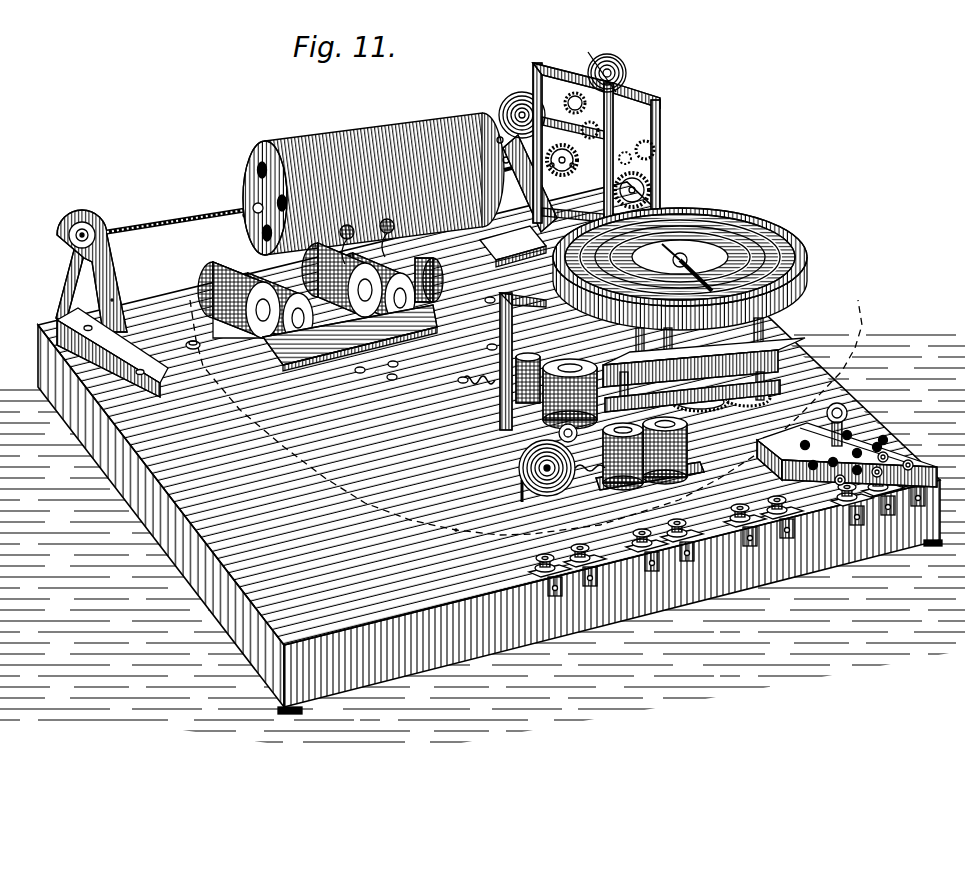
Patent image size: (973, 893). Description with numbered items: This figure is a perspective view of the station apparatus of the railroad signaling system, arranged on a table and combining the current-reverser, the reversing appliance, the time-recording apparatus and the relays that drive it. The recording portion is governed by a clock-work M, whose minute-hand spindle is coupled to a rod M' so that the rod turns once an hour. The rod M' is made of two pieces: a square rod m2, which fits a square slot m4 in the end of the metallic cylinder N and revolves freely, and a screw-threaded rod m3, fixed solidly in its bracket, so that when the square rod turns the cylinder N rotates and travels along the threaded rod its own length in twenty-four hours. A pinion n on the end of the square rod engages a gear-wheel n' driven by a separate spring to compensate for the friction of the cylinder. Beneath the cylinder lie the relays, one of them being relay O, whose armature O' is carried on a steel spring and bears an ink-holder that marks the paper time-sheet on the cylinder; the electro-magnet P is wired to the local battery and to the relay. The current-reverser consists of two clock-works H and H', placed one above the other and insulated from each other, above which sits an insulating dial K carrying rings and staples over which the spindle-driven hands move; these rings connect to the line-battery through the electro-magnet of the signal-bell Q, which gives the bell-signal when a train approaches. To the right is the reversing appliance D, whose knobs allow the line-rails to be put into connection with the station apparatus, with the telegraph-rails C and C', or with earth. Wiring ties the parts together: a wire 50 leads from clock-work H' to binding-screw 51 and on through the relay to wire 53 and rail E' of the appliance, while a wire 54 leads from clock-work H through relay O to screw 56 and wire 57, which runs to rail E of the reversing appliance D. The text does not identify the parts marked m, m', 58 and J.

The wire 50 is at (447, 118).
The wire 57 is at (446, 524).
The metallic cylinder N is at (383, 184).
The rod M' is at (137, 293).
The square rod m2 is at (112, 311).
The screw-threaded rod m3 is at (182, 217).
The square slot m4 is at (238, 225).
The pinion n is at (494, 132).
The shaft end m is at (502, 151).
The gear-wheel n' is at (546, 174).
The gear m' is at (567, 172).
The clock-work M is at (577, 159).
The relay O is at (324, 298).
The armature O' is at (290, 290).
The electro-magnet P is at (353, 295).
The screws 58 is at (374, 374).
The screw 56 is at (183, 345).
The binding-screw 51 is at (485, 301).
The wire 54 is at (488, 344).
The wire 53 is at (471, 397).
The dial K is at (680, 269).
The pedestal posts J is at (713, 345).
The clock-work H is at (704, 361).
The clock-work H' is at (699, 396).
The signal-bell Q is at (551, 463).
The reversing appliance D is at (847, 445).
The telegraph-rail C is at (850, 470).
The telegraph-rail C' is at (895, 458).